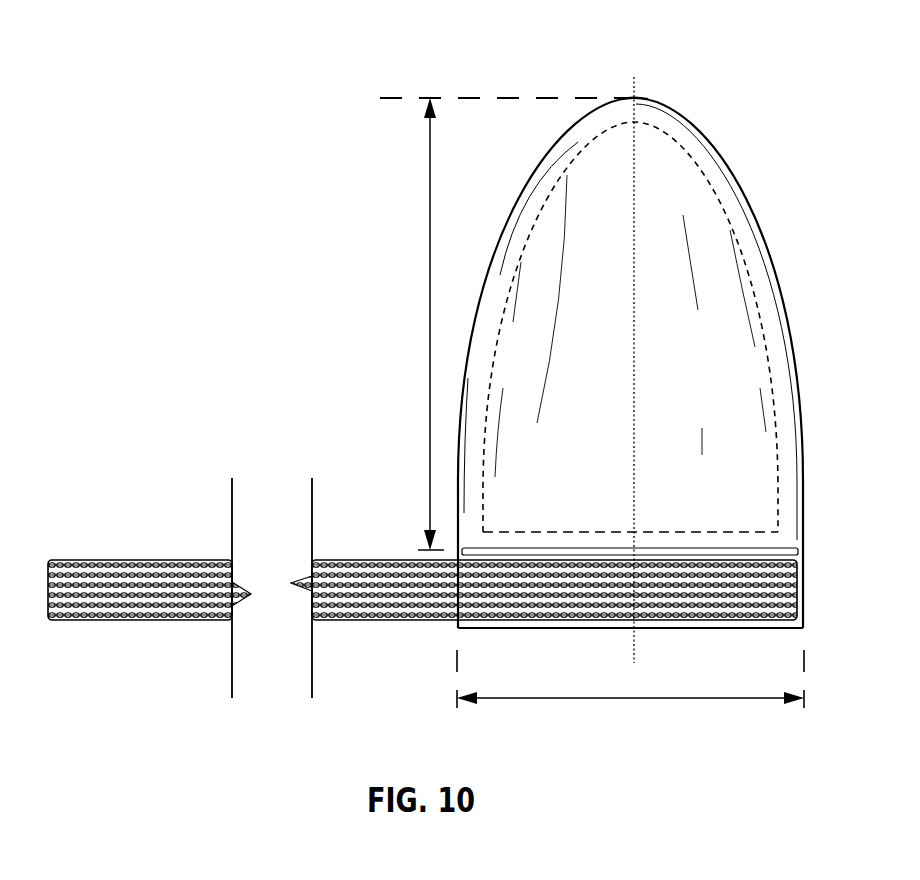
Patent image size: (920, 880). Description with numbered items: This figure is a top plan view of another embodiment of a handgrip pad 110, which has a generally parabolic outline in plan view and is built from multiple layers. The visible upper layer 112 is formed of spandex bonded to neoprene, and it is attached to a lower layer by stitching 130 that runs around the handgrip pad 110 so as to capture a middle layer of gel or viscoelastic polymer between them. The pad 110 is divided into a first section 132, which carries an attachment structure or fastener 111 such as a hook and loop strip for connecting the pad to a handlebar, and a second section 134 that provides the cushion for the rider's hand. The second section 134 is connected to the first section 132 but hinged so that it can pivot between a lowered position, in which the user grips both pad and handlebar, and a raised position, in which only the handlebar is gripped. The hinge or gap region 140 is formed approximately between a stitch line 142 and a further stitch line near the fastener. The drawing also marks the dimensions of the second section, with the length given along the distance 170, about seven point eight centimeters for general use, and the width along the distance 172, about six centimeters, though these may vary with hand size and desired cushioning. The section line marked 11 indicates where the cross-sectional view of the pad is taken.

The handgrip pad 110 is at (478, 365).
The attachment structure or fastener 111 is at (122, 620).
The upper layer 112 is at (712, 252).
The stitching 130 is at (548, 183).
The first section 132 is at (813, 550).
The second section 134 is at (655, 97).
The hinge or gap region 140 is at (767, 556).
The stitch line 142 is at (736, 532).
The distance 170 is at (428, 300).
The distance 172 is at (640, 700).
The section line 11- 11 is at (634, 77).